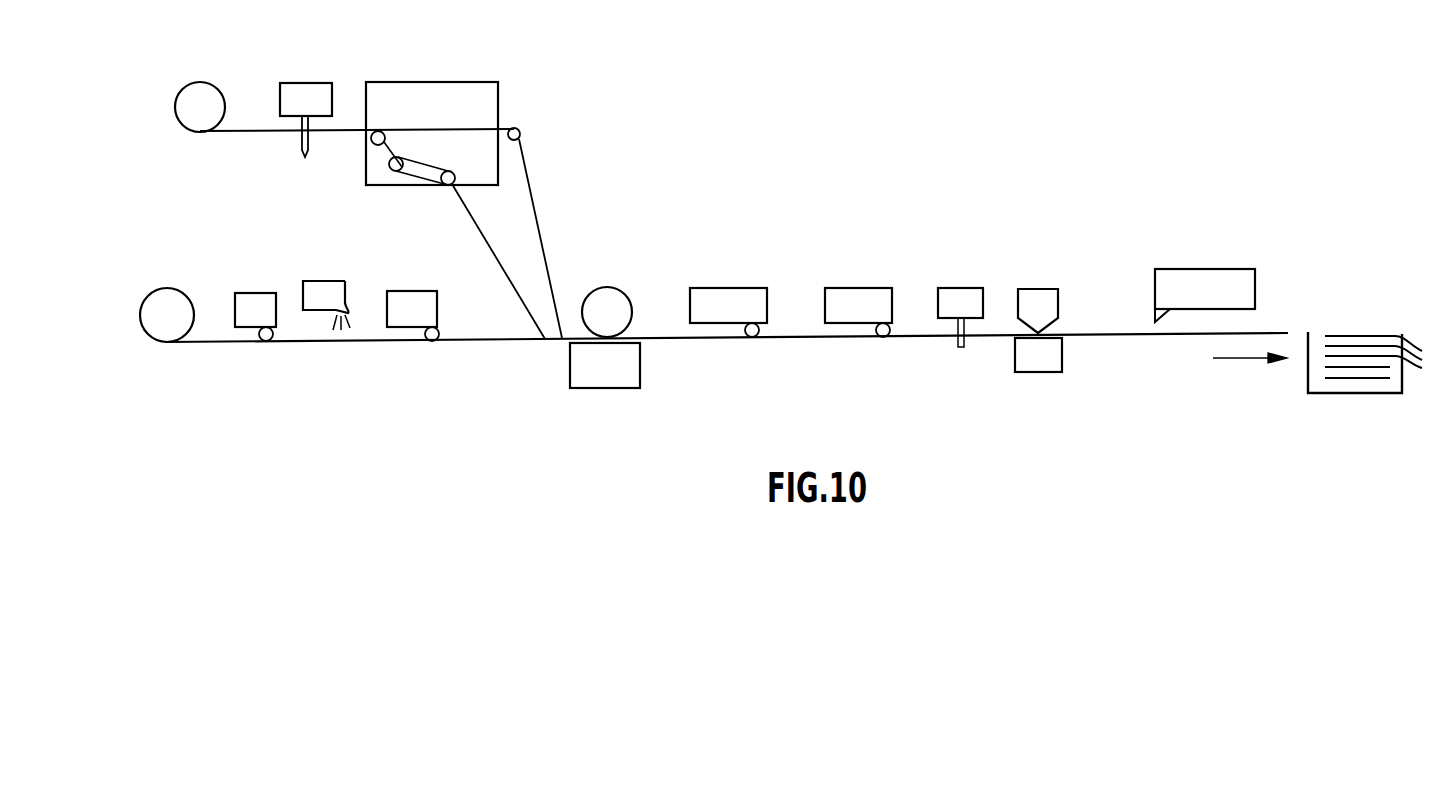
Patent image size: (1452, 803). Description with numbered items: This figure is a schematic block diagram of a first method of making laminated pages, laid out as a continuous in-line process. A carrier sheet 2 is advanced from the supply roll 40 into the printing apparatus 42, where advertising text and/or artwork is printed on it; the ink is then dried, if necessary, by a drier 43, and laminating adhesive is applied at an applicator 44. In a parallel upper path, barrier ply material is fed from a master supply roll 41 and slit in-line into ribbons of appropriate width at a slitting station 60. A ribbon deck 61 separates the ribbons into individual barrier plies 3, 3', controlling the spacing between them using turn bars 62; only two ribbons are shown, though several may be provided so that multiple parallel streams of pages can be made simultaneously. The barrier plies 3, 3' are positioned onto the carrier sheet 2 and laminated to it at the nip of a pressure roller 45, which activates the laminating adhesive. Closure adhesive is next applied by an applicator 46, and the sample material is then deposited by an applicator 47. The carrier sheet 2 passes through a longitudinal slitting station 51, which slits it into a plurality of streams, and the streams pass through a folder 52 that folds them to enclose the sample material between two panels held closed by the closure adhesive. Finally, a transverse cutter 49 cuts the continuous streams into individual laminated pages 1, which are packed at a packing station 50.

The laminated page 1 is at (1385, 357).
The carrier sheet 2 is at (207, 341).
The barrier ply 3 is at (498, 261).
The barrier ply 3' is at (545, 233).
The supply roll 40 is at (167, 290).
The master supply roll 41 is at (196, 82).
The printing apparatus 42 is at (255, 298).
The drier 43 is at (326, 285).
The applicator 44 is at (412, 298).
The pressure roller 45 is at (607, 287).
The applicator 46 is at (717, 293).
The applicator 47 is at (860, 292).
The transverse cutter 49 is at (1198, 270).
The packing station 50 is at (1355, 332).
The longitudinal slitting station 51 is at (962, 290).
The folder 52 is at (1038, 290).
The slitting station 60 is at (305, 82).
The ribbon deck 61 is at (418, 81).
The turn bars 62 is at (390, 168).